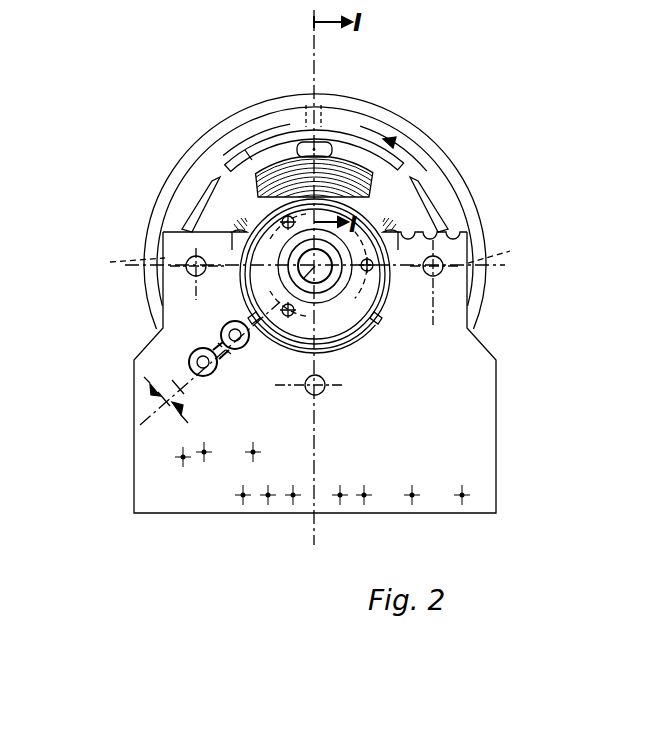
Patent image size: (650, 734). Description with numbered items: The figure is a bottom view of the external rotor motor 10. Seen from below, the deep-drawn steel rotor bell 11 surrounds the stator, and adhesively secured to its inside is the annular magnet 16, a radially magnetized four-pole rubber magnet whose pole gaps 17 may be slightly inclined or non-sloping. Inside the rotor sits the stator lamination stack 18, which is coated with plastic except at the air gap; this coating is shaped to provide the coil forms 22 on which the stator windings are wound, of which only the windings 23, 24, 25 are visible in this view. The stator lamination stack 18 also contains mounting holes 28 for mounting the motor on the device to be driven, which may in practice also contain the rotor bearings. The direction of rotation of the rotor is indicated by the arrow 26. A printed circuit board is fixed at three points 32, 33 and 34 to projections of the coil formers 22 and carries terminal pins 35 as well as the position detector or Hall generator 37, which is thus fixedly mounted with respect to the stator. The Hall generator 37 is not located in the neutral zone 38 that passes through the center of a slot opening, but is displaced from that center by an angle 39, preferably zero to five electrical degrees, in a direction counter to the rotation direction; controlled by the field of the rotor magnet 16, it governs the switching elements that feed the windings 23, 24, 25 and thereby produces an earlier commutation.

The external rotor motor 10 is at (468, 116).
The rotor bell 11 is at (222, 125).
The annular magnet 16 is at (202, 163).
The pole gap 17 is at (325, 105).
The stator lamination stack 18 is at (248, 150).
The coil form 22 is at (353, 157).
The stator winding 23 is at (222, 222).
The stator winding 24 is at (285, 175).
The stator winding 25 is at (405, 226).
The arrow 26 is at (416, 150).
The mounting holes 28 is at (286, 228).
The fixing point 32 is at (194, 278).
The fixing point 33 is at (322, 390).
The fixing point 34 is at (430, 277).
The terminal pins 35 is at (293, 500).
The Hall generator 37 is at (228, 350).
The neutral zone 38 is at (175, 414).
The angle 39 is at (162, 398).